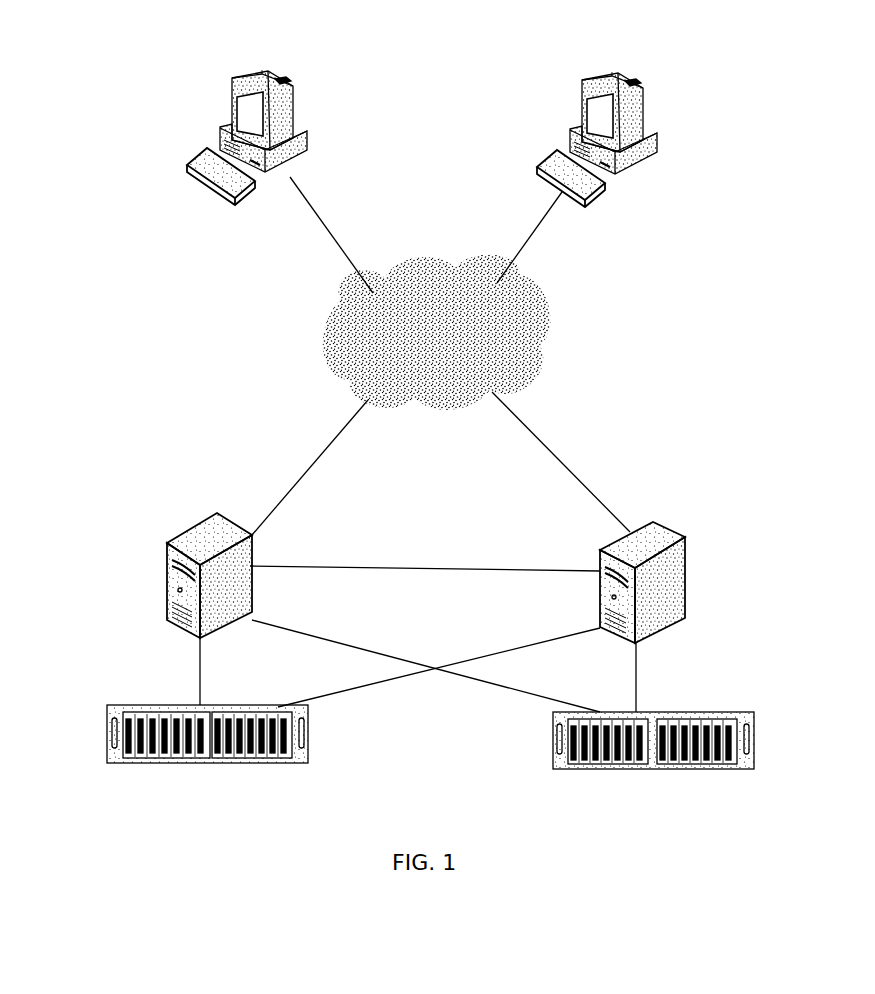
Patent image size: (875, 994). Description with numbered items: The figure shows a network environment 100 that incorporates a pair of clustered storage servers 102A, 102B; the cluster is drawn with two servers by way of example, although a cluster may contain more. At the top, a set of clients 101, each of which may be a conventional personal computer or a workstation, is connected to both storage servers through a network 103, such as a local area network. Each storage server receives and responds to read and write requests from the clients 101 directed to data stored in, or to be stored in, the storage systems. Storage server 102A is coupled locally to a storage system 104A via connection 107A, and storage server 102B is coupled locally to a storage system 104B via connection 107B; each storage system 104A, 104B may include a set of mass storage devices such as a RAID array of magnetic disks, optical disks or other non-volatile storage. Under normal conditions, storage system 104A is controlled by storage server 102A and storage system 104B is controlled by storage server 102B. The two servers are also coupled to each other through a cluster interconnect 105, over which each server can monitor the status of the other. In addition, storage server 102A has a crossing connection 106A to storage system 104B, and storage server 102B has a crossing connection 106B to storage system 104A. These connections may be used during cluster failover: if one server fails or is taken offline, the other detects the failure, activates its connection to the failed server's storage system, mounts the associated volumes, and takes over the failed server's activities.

The network environment 100 is at (711, 49).
The clients 101 is at (227, 135).
The network 103 is at (437, 331).
The storage server 102A is at (182, 537).
The storage server 102B is at (678, 532).
The storage system 104A is at (280, 763).
The storage system 104B is at (737, 770).
The cluster interconnect 105 is at (411, 566).
The connection 106A is at (317, 637).
The connection 106B is at (552, 641).
The connection 107A is at (200, 668).
The connection 107B is at (637, 672).